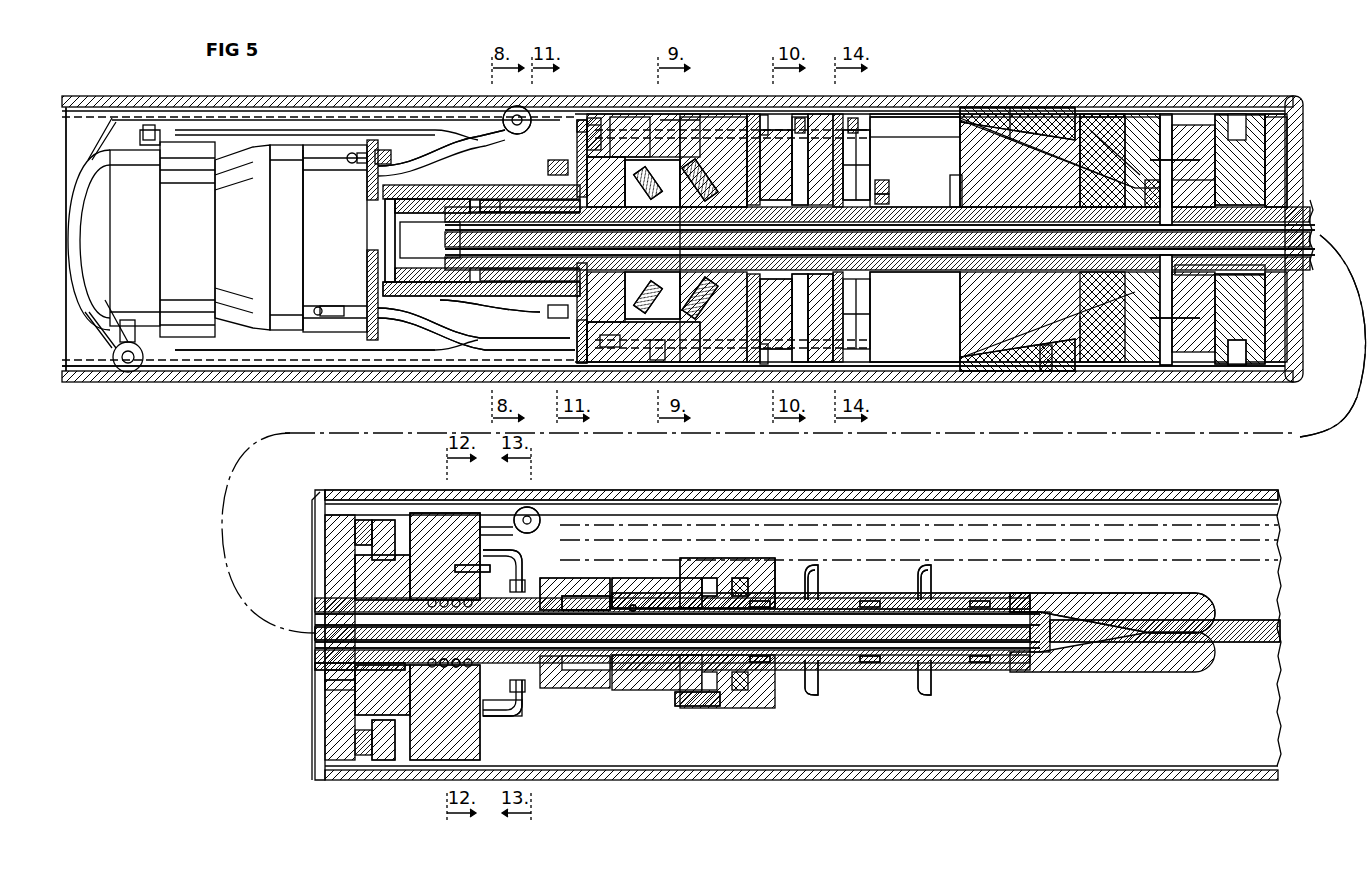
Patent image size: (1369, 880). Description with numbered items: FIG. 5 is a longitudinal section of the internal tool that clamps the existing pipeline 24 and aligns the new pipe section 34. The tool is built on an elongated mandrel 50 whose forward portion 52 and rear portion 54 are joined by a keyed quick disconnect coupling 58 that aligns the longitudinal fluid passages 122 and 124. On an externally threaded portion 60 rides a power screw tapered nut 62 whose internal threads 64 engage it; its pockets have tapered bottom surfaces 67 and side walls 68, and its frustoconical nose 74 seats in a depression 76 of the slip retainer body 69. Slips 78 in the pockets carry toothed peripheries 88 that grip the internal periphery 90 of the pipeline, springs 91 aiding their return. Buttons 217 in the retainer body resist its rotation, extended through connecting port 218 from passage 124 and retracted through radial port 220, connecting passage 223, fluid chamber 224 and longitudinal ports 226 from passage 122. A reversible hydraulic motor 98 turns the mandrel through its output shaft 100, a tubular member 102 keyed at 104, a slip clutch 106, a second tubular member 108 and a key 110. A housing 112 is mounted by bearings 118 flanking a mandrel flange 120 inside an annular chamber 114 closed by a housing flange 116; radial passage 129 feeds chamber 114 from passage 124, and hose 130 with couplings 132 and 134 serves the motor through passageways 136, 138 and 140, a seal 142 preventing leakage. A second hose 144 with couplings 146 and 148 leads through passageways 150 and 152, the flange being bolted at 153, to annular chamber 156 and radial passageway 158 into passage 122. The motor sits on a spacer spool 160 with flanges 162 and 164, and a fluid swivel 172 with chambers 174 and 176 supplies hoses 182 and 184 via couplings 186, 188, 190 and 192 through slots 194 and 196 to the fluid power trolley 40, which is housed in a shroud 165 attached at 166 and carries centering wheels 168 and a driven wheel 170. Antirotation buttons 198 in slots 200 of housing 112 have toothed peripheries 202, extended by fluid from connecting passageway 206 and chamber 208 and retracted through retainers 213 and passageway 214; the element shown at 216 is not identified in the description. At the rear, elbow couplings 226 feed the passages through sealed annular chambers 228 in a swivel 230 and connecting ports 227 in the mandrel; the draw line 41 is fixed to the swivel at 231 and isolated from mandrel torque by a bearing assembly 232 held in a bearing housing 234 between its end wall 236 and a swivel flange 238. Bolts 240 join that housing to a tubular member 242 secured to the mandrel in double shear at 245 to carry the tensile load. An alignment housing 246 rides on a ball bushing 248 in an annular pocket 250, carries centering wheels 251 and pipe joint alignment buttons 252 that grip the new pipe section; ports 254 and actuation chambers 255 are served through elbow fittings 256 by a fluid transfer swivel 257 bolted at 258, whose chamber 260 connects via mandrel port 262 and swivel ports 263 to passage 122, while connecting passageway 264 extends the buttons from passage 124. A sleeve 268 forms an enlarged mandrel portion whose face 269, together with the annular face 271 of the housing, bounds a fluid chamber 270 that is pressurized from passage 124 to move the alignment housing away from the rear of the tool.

The housing bottom wall 24 is at (1093, 371).
The outer tube 34 is at (948, 500).
The nose end 40 is at (76, 170).
The drive rod 41 is at (1250, 622).
The inner tube 50 is at (928, 195).
The end cap 52 is at (1300, 215).
The sleeve 54 is at (316, 667).
The centerline continuation 58 is at (1330, 428).
The chamber 60 is at (920, 268).
The piston block 62 is at (965, 118).
The stop 64 is at (965, 205).
The cam surface 67 is at (1075, 165).
The partition 68 is at (1078, 118).
The follower block 69 is at (1140, 118).
The ramp 74 is at (1098, 165).
The follower 76 is at (1150, 182).
The wedge 78 is at (1030, 110).
The wedge member 88 is at (990, 110).
The spacer 90 is at (930, 130).
The set screw 91 is at (1046, 371).
The lamp housing 98 is at (320, 150).
The socket 100 is at (385, 222).
The bushing 102 is at (420, 207).
The insulator 104 is at (480, 205).
The bracket upper 106 is at (372, 196).
The bracket lower 108 is at (372, 254).
The contact pin 110 is at (438, 243).
The bearing housing 112 is at (706, 118).
The bearing race 114 is at (648, 190).
The threaded collar 116 is at (597, 118).
The roller bearing 118 is at (708, 195).
The bearing ball 120 is at (657, 195).
The upper shaft 122 is at (1296, 227).
The lower shaft 124 is at (1300, 250).
The spacer ring 129 is at (678, 235).
The lower spring arm 130 is at (478, 342).
The pin 132 is at (340, 306).
The plate 134 is at (585, 355).
The cover 136 is at (625, 350).
The screw 138 is at (665, 350).
The retainer 140 is at (682, 338).
The bearing cage 142 is at (618, 330).
The guide rail 144 is at (470, 125).
The pin 146 is at (355, 152).
The thread 148 is at (580, 120).
The block 150 is at (615, 118).
The cover plate 152 is at (672, 118).
The slot 153 is at (592, 122).
The screw 156 is at (888, 174).
The screw 158 is at (888, 196).
The spring arm 160 is at (428, 316).
The nut 162 is at (383, 150).
The clip 164 is at (556, 318).
The bracket 165 is at (135, 134).
The bolt 166 is at (608, 350).
The roller 168 is at (525, 112).
The roller 170 is at (132, 372).
The fastener 172 is at (556, 178).
The lower wall 174 is at (525, 296).
The plate 176 is at (583, 200).
The housing line 182 is at (234, 134).
The lower housing line 184 is at (312, 352).
The upper spring arm 186 is at (540, 155).
The screw 188 is at (150, 125).
The arm 190 is at (528, 314).
The pin 192 is at (128, 320).
The insulator 194 is at (525, 207).
The conductor 196 is at (560, 265).
The seal 198 is at (775, 239).
The gap 200 is at (800, 178).
The screw 202 is at (765, 116).
The ring 206 is at (798, 275).
The roller 208 is at (704, 294).
The screw 213 is at (800, 118).
The spacer 214 is at (920, 138).
The screw 216 is at (852, 118).
The end block 217 is at (1240, 112).
The ring 218 is at (1260, 275).
The pin 220 is at (1166, 118).
The block 223 is at (1170, 215).
The spring 224 is at (1148, 191).
The clip 226 is at (1182, 160).
The finger 227 is at (825, 600).
The tab 228 is at (818, 580).
The coupling tube 230 is at (1140, 598).
The sleeve 231 is at (1090, 598).
The seal 232 is at (740, 578).
The block 234 is at (700, 555).
The wall 236 is at (773, 570).
The recess 238 is at (710, 578).
The key 240 is at (695, 706).
The block 242 is at (655, 580).
The pin 245 is at (633, 604).
The block 246 is at (430, 515).
The pin 248 is at (462, 572).
The spring 250 is at (450, 668).
The roller 251 is at (537, 510).
The screw 252 is at (376, 640).
The plate 254 is at (452, 560).
The thread 255 is at (395, 518).
The spring 256 is at (520, 718).
The block 257 is at (556, 575).
The spring 258 is at (500, 550).
The plate 260 is at (562, 596).
The shim 262 is at (566, 612).
The pin 263 is at (522, 582).
The block 264 is at (403, 685).
The line 268 is at (330, 675).
The line 269 is at (335, 685).
The block 270 is at (400, 590).
The shaft 271 is at (400, 625).